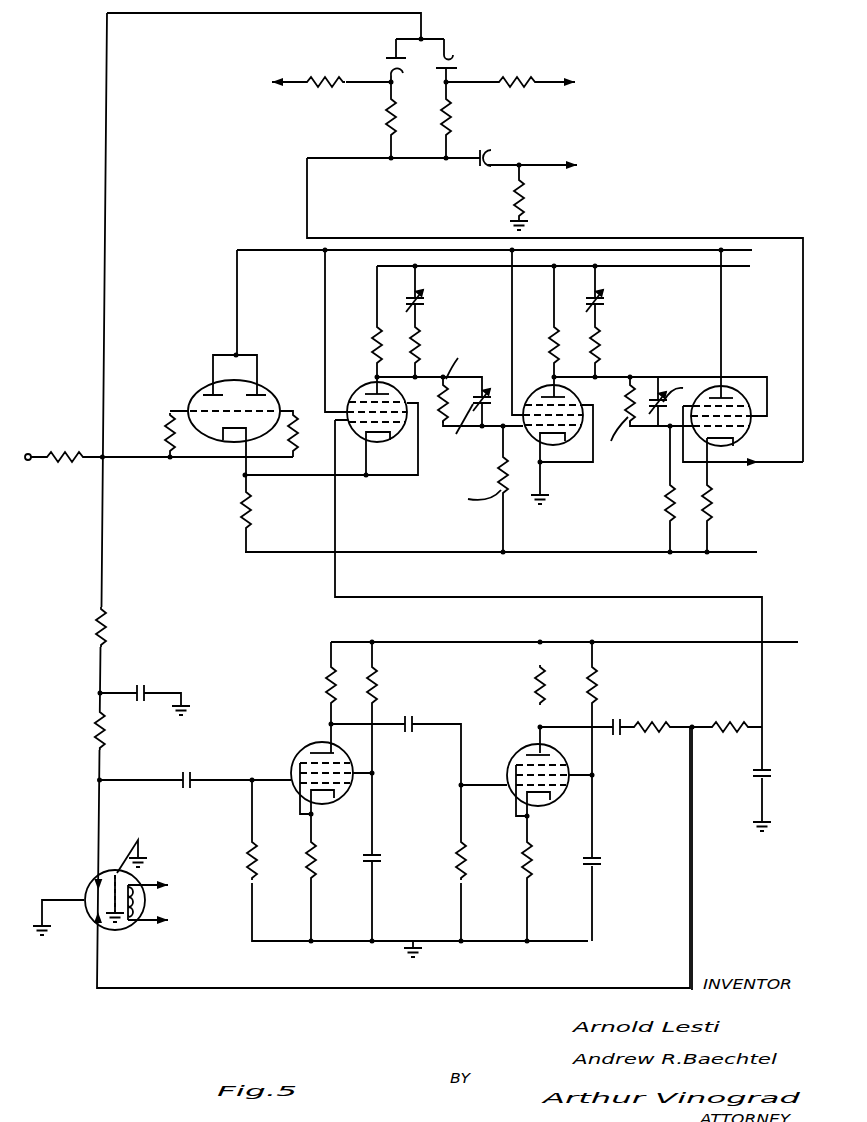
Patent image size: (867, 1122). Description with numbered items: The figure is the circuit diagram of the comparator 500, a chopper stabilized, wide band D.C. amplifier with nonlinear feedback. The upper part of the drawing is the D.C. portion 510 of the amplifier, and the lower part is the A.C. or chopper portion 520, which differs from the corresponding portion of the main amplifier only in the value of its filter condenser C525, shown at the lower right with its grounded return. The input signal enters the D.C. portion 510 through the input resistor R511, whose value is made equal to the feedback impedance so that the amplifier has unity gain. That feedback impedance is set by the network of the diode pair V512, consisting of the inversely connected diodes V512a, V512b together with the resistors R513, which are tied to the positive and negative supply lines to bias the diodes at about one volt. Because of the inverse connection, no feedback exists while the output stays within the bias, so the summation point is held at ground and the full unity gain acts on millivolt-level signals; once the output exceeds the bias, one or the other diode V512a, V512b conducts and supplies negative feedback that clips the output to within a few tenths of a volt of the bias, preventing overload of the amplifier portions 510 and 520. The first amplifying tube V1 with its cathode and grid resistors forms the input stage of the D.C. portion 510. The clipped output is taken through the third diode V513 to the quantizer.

The comparator 500 is at (350, 1042).
The D.C. portion of the amplifier 510 is at (170, 207).
The A.C. portion of the amplifier 520 is at (175, 582).
The diode pair V512 is at (477, 18).
The diode V512a is at (387, 62).
The diode V512b is at (452, 56).
The third diode V513 is at (480, 188).
The input resistor R511 is at (77, 464).
The resistor R513 is at (418, 120).
The input amplifier tube V1 is at (234, 453).
The filter condenser C525 is at (770, 768).